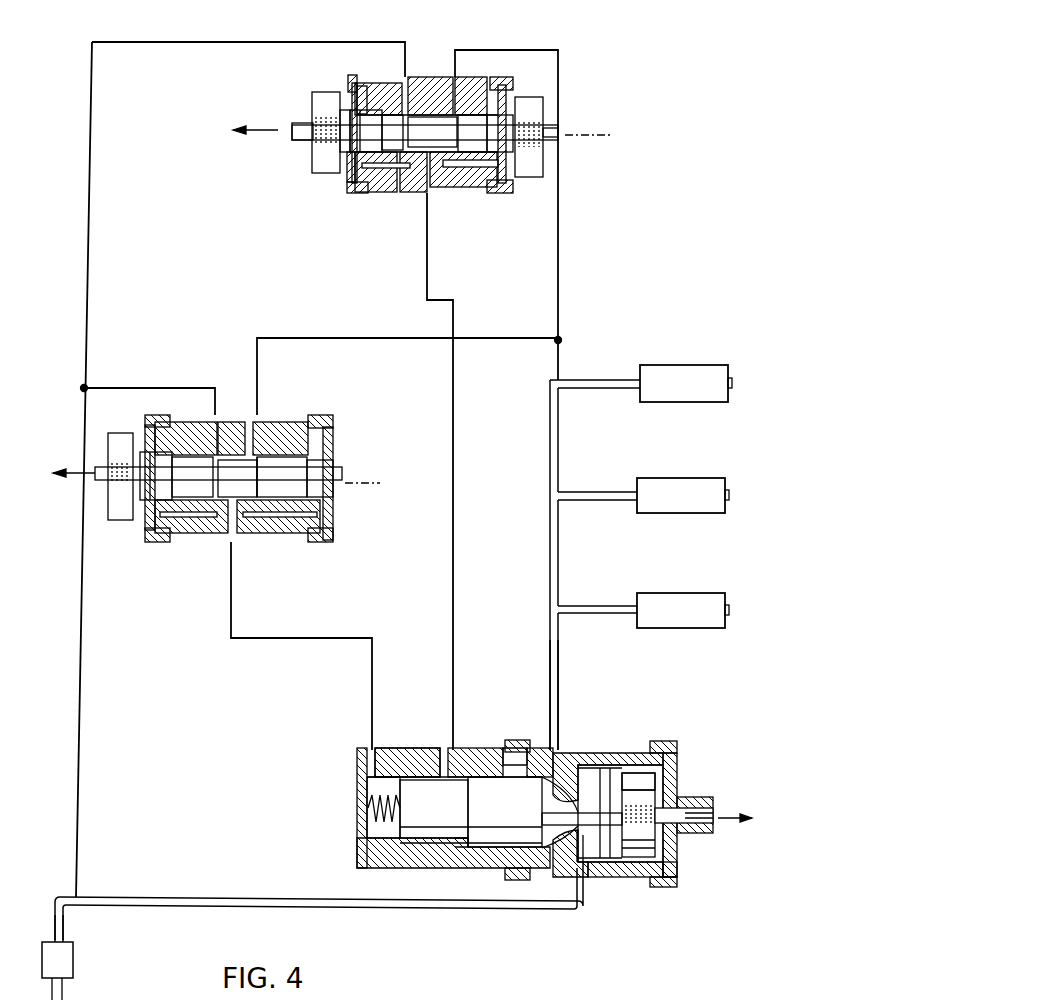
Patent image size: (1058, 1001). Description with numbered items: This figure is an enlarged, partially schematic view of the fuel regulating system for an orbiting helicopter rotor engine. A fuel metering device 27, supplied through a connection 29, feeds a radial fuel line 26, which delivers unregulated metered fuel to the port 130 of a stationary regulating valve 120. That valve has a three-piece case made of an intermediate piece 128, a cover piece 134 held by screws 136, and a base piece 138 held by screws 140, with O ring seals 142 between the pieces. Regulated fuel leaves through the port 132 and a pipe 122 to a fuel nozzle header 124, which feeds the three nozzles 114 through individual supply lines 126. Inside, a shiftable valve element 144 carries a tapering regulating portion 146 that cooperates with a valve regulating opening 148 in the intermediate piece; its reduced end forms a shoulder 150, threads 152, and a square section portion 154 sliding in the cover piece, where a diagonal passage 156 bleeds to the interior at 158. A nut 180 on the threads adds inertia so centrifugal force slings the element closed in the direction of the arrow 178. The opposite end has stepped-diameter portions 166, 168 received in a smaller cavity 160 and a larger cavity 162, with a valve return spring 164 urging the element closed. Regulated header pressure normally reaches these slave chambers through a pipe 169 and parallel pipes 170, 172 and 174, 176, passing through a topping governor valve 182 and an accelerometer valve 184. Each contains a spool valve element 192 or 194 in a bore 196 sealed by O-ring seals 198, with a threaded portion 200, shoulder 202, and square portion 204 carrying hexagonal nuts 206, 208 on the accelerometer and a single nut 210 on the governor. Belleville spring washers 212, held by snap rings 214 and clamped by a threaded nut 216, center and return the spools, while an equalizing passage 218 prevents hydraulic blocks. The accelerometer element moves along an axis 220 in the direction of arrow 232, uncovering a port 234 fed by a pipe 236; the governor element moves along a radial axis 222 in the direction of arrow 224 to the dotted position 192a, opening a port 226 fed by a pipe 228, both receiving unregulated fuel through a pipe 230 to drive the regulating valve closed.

The radial fuel line 26 is at (318, 893).
The fuel metering device 27 is at (74, 958).
The conduit 29 is at (60, 930).
The nozzles 114 is at (668, 366).
The regulating valve 120 is at (358, 853).
The pipe 122 is at (549, 650).
The fuel nozzle header 124 is at (549, 552).
The individual supply lines 126 is at (577, 606).
The intermediate piece 128 is at (610, 790).
The port 130 is at (588, 868).
The port 132 is at (549, 752).
The cover piece 134 is at (668, 750).
The screws 136 is at (682, 884).
The base piece 138 is at (388, 753).
The screws 140 is at (505, 752).
The O ring seals 142 is at (502, 872).
The shiftable valve element 144 is at (478, 845).
The tapering regulating portion 146 is at (598, 775).
The valve regulating opening 148 is at (568, 832).
The shoulder 150 is at (638, 778).
The threads 152 is at (668, 790).
The square section portion 154 is at (690, 812).
The diagonal passage 156 is at (672, 800).
The interior of the intermediate piece 158 is at (602, 775).
The smaller cavity 160 is at (377, 825).
The larger cavity 162 is at (455, 845).
The valve return spring 164 is at (370, 790).
The stepped-diameter portion 166 is at (400, 775).
The stepped-diameter portion 168 is at (462, 778).
The pipe 169 is at (560, 352).
The pipe 170 is at (560, 222).
The pipe 172 is at (427, 270).
The pipe 174 is at (337, 338).
The pipe 176 is at (300, 638).
The arrow 178 is at (740, 815).
The nut 180 is at (640, 752).
The topping governor valve 182 is at (251, 535).
The accelerometer valve 184 is at (465, 187).
The spool valve element 192 is at (283, 462).
The dotted line position 192a is at (260, 480).
The spool valve element 194 is at (468, 117).
The bore 196 is at (392, 178).
The O-ring seals 198 is at (383, 108).
The threaded portion 200 is at (310, 118).
The shoulder 202 is at (340, 113).
The square portion 204 is at (300, 122).
The hexagonal nut 206 is at (313, 152).
The hexagonal nut 208 is at (537, 113).
The hexagonal nut 210 is at (127, 425).
The Belleville spring washer 212 is at (351, 95).
The snap rings 214 is at (350, 158).
The hexagonal threaded nut 216 is at (375, 62).
The equalizing passage 218 is at (405, 175).
The axis 220 is at (577, 136).
The axis 222 is at (357, 484).
The arrow 224 is at (70, 478).
The port 226 is at (228, 422).
The pipe 228 is at (100, 388).
The pipe 230 is at (82, 740).
The arrow 232 is at (252, 131).
The port 234 is at (405, 97).
The pipe 236 is at (179, 20).